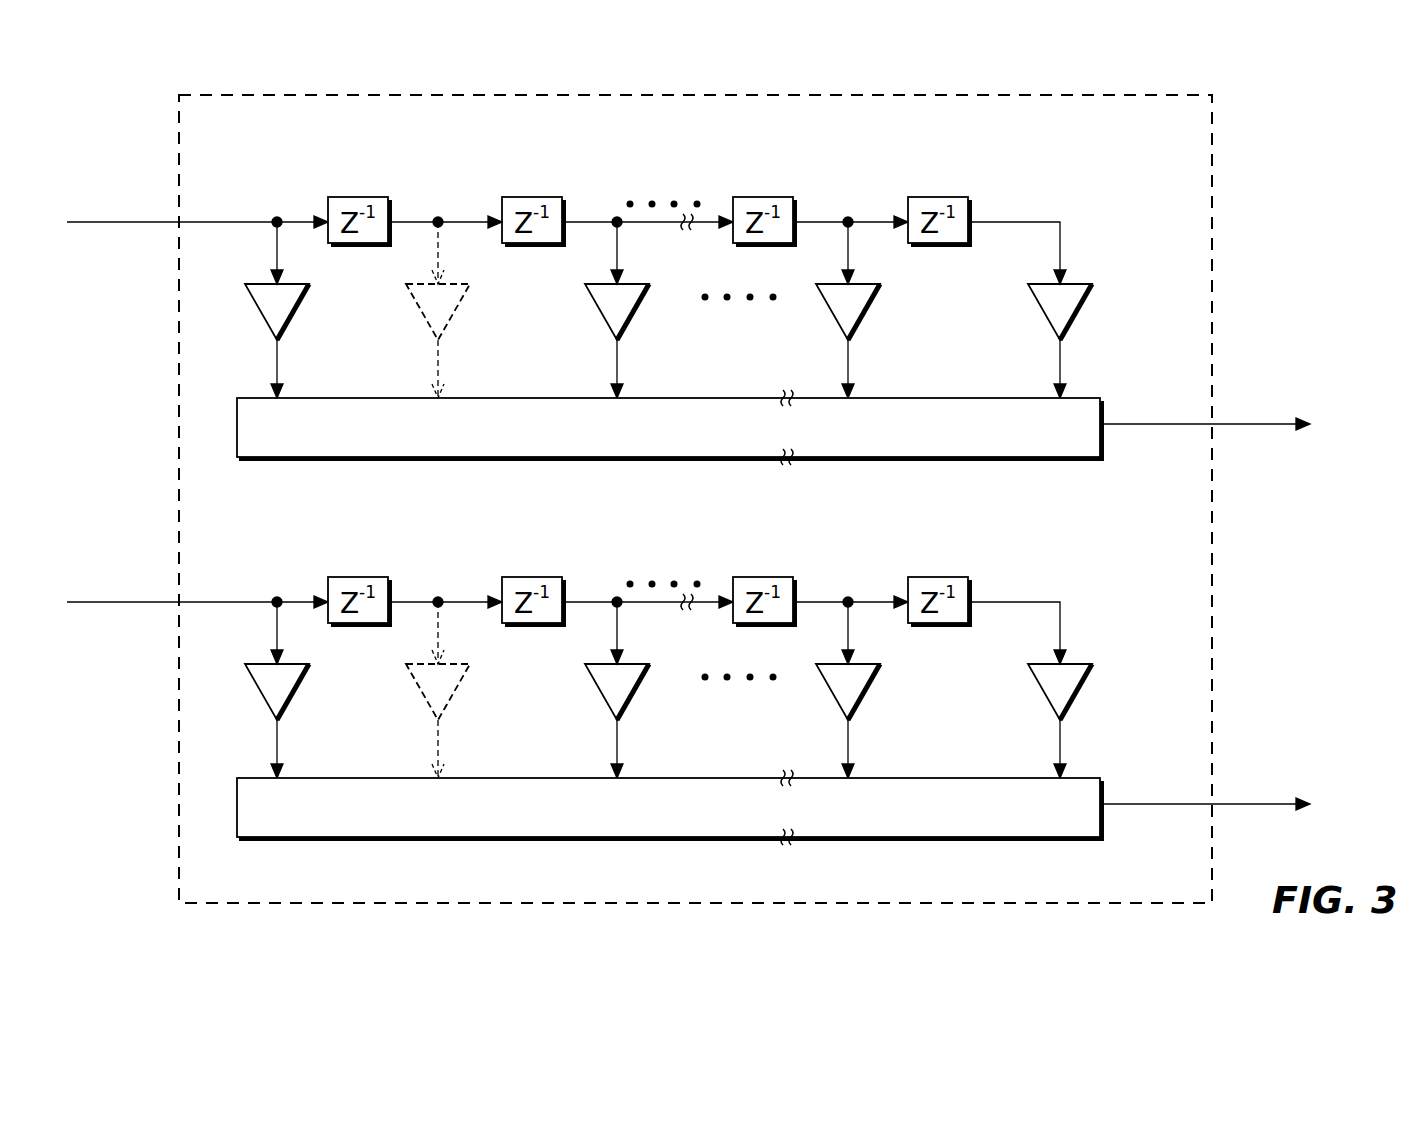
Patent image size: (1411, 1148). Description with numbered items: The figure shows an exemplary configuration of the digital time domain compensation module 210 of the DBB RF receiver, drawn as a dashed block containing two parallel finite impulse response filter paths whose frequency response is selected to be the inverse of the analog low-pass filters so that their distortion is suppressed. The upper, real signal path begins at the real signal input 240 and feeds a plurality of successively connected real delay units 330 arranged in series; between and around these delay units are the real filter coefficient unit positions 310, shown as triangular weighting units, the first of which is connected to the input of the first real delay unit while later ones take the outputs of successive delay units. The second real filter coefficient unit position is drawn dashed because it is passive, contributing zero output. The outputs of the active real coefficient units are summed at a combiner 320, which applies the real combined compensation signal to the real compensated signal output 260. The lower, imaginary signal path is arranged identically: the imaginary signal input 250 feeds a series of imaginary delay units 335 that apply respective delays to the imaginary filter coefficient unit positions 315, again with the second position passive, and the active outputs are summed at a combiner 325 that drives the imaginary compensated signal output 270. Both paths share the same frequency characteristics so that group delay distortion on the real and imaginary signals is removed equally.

The digital time domain compensation module 210 is at (1212, 167).
The real signal input 240 is at (135, 222).
The imaginary signal input 250 is at (135, 602).
The real compensated signal output 260 is at (1275, 424).
The imaginary compensated signal output 270 is at (1275, 804).
The real filter coefficient unit positions 310 is at (290, 322).
The imaginary filter coefficient unit positions 315 is at (290, 702).
The combiner 320 is at (952, 398).
The combiner 325 is at (952, 778).
The real delay units 330 is at (346, 197).
The imaginary delay units 335 is at (346, 577).